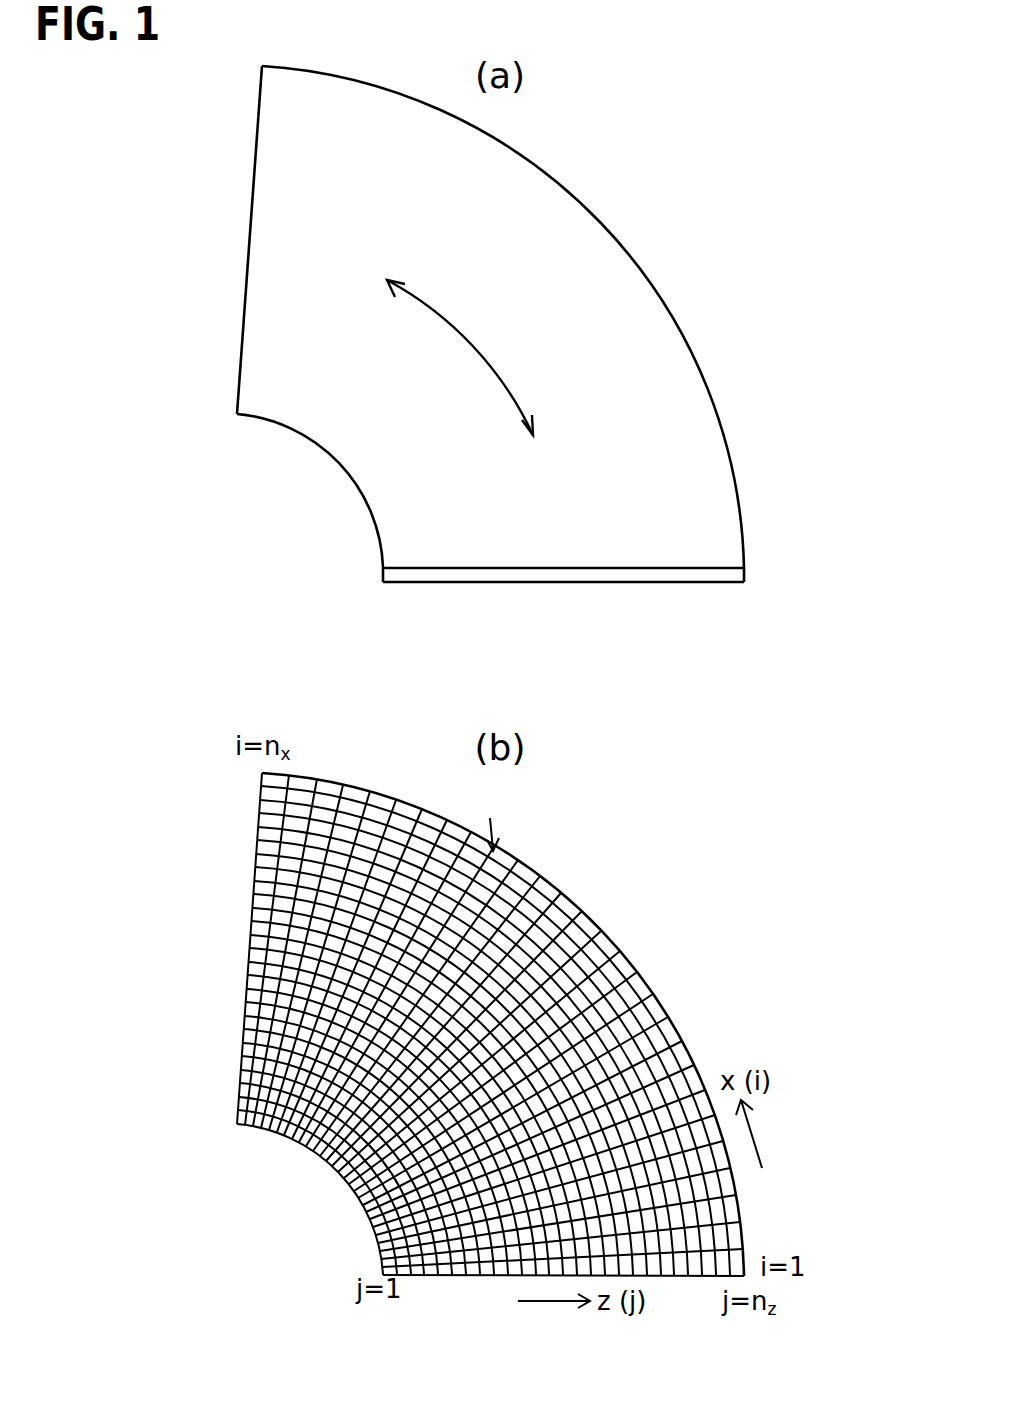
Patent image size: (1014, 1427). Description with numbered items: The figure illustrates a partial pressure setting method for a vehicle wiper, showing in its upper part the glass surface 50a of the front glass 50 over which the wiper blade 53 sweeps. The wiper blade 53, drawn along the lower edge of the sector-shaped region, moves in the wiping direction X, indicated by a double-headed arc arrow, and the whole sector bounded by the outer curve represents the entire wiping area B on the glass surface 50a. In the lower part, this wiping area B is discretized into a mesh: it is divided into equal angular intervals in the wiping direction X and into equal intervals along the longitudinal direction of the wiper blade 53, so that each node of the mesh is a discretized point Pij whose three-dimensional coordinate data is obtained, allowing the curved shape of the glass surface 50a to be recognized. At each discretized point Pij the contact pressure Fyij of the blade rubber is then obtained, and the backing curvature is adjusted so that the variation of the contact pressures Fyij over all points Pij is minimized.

The front glass 50 is at (530, 671).
The glass surface 50a is at (530, 671).
The wiper blade 53 is at (448, 583).
The wiping area B is at (675, 352).
The wiping direction X is at (482, 350).
The discretized point Pij is at (400, 802).
The contact pressure Fyij is at (483, 820).